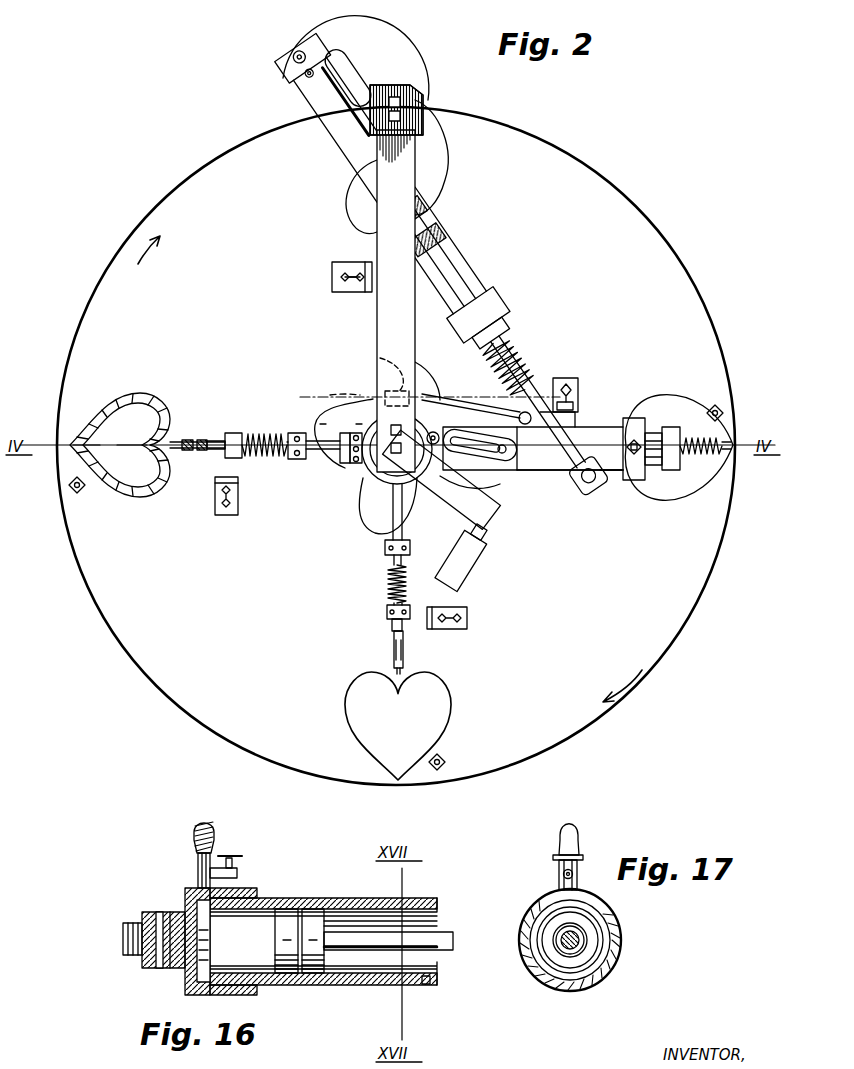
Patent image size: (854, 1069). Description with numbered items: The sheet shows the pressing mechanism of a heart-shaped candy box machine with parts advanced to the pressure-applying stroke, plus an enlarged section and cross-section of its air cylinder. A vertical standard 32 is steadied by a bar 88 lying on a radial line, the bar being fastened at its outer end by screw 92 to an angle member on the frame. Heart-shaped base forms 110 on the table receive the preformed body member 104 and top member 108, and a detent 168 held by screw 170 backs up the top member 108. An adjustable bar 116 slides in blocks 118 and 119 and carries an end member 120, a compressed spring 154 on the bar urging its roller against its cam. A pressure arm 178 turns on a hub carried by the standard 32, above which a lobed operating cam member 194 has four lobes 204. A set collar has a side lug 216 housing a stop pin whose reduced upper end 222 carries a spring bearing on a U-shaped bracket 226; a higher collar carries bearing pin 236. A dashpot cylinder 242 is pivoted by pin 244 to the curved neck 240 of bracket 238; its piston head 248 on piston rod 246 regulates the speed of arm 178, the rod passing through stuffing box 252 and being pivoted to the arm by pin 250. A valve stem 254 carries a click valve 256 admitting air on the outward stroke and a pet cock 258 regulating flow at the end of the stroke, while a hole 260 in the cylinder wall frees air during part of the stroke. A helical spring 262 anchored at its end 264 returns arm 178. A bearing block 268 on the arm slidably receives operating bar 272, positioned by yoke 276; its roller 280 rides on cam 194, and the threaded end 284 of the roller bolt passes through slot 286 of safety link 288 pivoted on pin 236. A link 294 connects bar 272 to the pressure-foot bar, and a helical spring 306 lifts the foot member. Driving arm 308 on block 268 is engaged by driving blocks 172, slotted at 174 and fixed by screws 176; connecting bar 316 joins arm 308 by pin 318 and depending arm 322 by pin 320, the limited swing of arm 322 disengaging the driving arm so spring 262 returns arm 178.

In FIG. 2, the standard 32 is at (396, 487).
In FIG. 2, the bar 88 is at (377, 328).
In FIG. 2, the screw 92 is at (403, 117).
In FIG. 2, the body member 104 is at (148, 410).
In FIG. 2, the top member 108 is at (445, 178).
In FIG. 2, the base form 110 is at (122, 432).
In FIG. 2, the adjustable bar 116 is at (392, 626).
In FIG. 2, the block 118 is at (292, 462).
In FIG. 2, the block 119 is at (232, 433).
In FIG. 2, the end member 120 is at (394, 655).
In FIG. 2, the compressed spring 154 is at (262, 433).
In FIG. 2, the detent 168 is at (80, 495).
In FIG. 2, the screw 170 is at (70, 492).
In FIG. 2, the driving block 172 is at (578, 380).
In FIG. 2, the slot 174 is at (345, 274).
In FIG. 2, the screws 176 is at (566, 382).
In FIG. 2, the pressure arm 178 is at (616, 472).
In FIG. 2, the lobed operating cam member 194 is at (338, 530).
In FIG. 2, the lobes 204 is at (336, 398).
In FIG. 2, the side lug 216 is at (335, 452).
In FIG. 2, the reduced upper end portion 222 is at (300, 428).
In FIG. 2, the U-shaped bracket 226 is at (346, 465).
In FIG. 2, the bearing pin 236 is at (437, 431).
In FIG. 2, the bracket 238 is at (392, 84).
In FIG. 2, the curved neck 240 is at (292, 54).
In FIG. 16, the curved neck 240 is at (123, 947).
In FIG. 2, the cylinder 242 is at (346, 168).
In FIG. 16, the cylinder 242 is at (340, 986).
In FIG. 17, the cylinder 242 is at (582, 984).
In FIG. 2, the pin 244 is at (304, 73).
In FIG. 16, the pin 244 is at (160, 970).
In FIG. 2, the piston rod 246 is at (452, 262).
In FIG. 16, the piston rod 246 is at (452, 934).
In FIG. 17, the piston rod 246 is at (582, 938).
In FIG. 2, the piston head 248 is at (440, 223).
In FIG. 16, the piston head 248 is at (306, 915).
In FIG. 17, the piston head 248 is at (590, 956).
In FIG. 2, the pin 250 is at (588, 488).
In FIG. 2, the stuffing box 252 is at (506, 318).
In FIG. 16, the valve stem 254 is at (198, 884).
In FIG. 17, the valve stem 254 is at (559, 892).
In FIG. 16, the click valve 256 is at (193, 832).
In FIG. 17, the click valve 256 is at (559, 834).
In FIG. 16, the pet cock 258 is at (238, 870).
In FIG. 17, the pet cock 258 is at (562, 876).
In FIG. 16, the hole 260 is at (426, 985).
In FIG. 2, the helical spring 262 is at (522, 362).
In FIG. 2, the one end 264 is at (364, 70).
In FIG. 2, the bearing block 268 is at (549, 472).
In FIG. 2, the operating bar 272 is at (478, 484).
In FIG. 2, the yoke 276 is at (633, 418).
In FIG. 2, the roller 280 is at (490, 462).
In FIG. 2, the reduced threaded upper end 284 is at (505, 451).
In FIG. 2, the slot 286 is at (452, 492).
In FIG. 2, the safety link 288 is at (481, 436).
In FIG. 2, the link 294 is at (672, 470).
In FIG. 2, the helical spring 306 is at (712, 458).
In FIG. 2, the driving arm 308 is at (578, 412).
In FIG. 2, the connecting bar 316 is at (468, 390).
In FIG. 2, the pin 318 is at (578, 400).
In FIG. 2, the pin 320 is at (378, 362).
In FIG. 2, the depending arm 322 is at (384, 388).